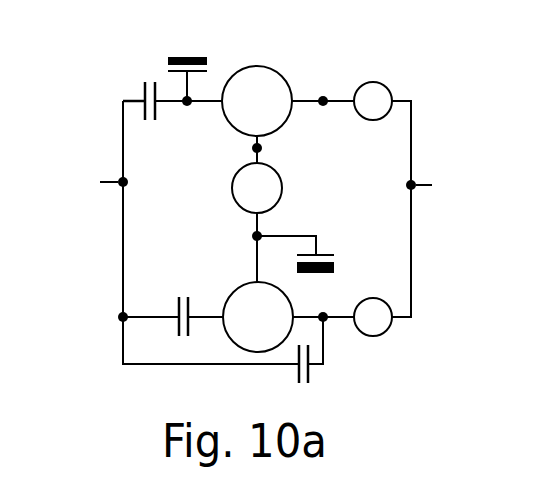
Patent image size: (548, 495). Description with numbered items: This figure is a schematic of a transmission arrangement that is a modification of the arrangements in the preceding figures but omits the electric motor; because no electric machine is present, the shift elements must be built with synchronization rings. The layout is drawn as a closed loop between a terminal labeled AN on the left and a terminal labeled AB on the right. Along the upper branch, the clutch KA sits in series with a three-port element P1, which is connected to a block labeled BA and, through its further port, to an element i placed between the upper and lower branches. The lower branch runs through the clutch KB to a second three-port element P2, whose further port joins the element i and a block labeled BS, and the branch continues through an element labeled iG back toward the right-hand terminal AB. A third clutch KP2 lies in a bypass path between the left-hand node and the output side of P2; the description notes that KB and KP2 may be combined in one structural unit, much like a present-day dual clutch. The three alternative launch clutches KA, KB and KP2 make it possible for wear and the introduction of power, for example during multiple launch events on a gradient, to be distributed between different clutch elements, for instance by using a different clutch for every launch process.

The launch clutch KA is at (143, 113).
The battery BA is at (187, 68).
The three-port device P1 is at (257, 101).
The inverter i=-1 i is at (257, 188).
The battery BS is at (315, 278).
The terminal AN is at (95, 182).
The terminal AB is at (438, 185).
The launch clutch KB is at (183, 329).
The three-port device P2 is at (258, 317).
The current source iG is at (373, 317).
The launch clutch KP2 is at (302, 377).